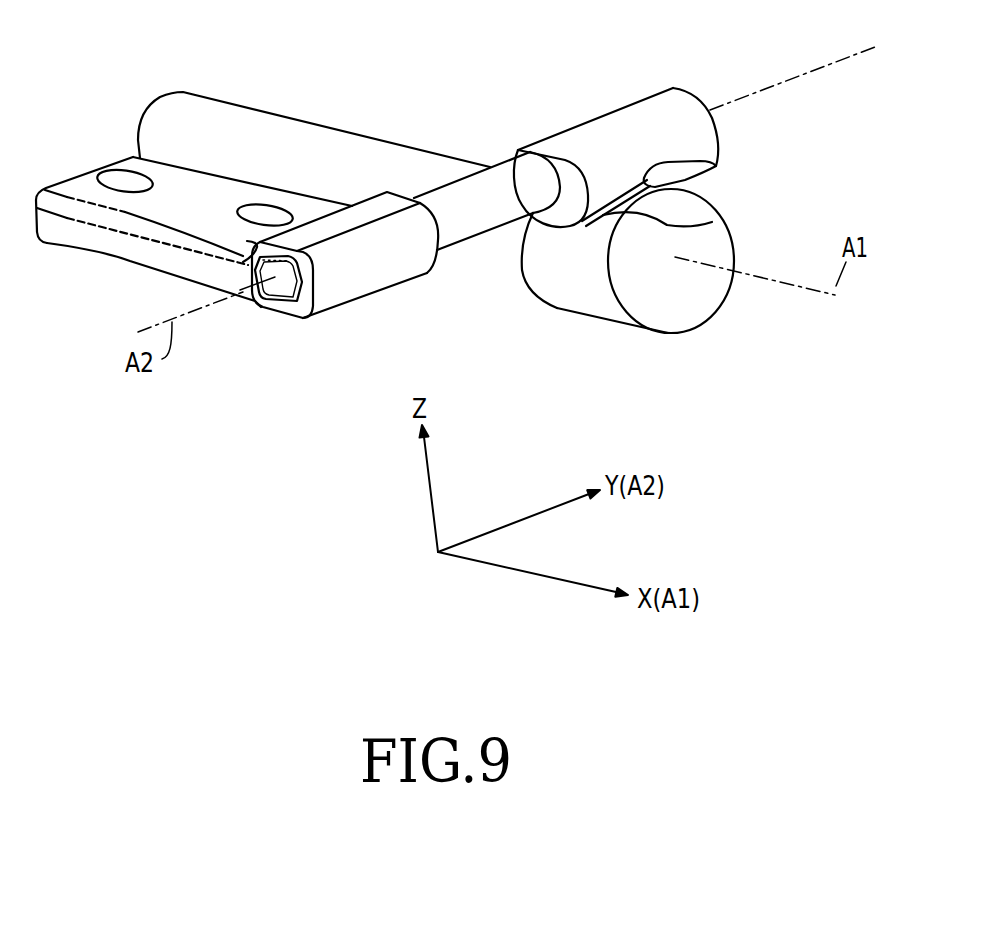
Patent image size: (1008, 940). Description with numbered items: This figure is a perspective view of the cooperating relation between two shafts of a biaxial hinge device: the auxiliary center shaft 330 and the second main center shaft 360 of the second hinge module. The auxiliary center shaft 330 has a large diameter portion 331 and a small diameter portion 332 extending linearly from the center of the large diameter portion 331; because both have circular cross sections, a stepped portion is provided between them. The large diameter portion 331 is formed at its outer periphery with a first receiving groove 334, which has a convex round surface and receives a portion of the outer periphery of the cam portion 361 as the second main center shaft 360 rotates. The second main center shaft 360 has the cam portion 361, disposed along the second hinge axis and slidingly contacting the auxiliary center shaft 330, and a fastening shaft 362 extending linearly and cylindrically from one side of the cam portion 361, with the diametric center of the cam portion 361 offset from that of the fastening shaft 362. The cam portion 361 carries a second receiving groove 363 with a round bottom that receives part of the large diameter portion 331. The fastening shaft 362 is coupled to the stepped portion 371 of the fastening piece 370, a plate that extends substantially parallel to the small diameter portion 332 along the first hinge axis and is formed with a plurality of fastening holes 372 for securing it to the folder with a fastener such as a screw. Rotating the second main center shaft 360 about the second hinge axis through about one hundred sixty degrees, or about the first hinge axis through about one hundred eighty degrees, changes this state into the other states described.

The auxiliary center shaft 330 is at (478, 214).
The large diameter portion 331 is at (594, 303).
The small diameter portion 332 is at (302, 137).
The first receiving groove 334 is at (712, 222).
The second main center shaft 360 is at (618, 138).
The cam portion 361 is at (680, 100).
The fastening shaft 362 is at (502, 173).
The second receiving groove 363 is at (700, 162).
The fastening piece 370 is at (112, 279).
The stepped portion 371 is at (337, 293).
The fastening holes 372 is at (110, 181).